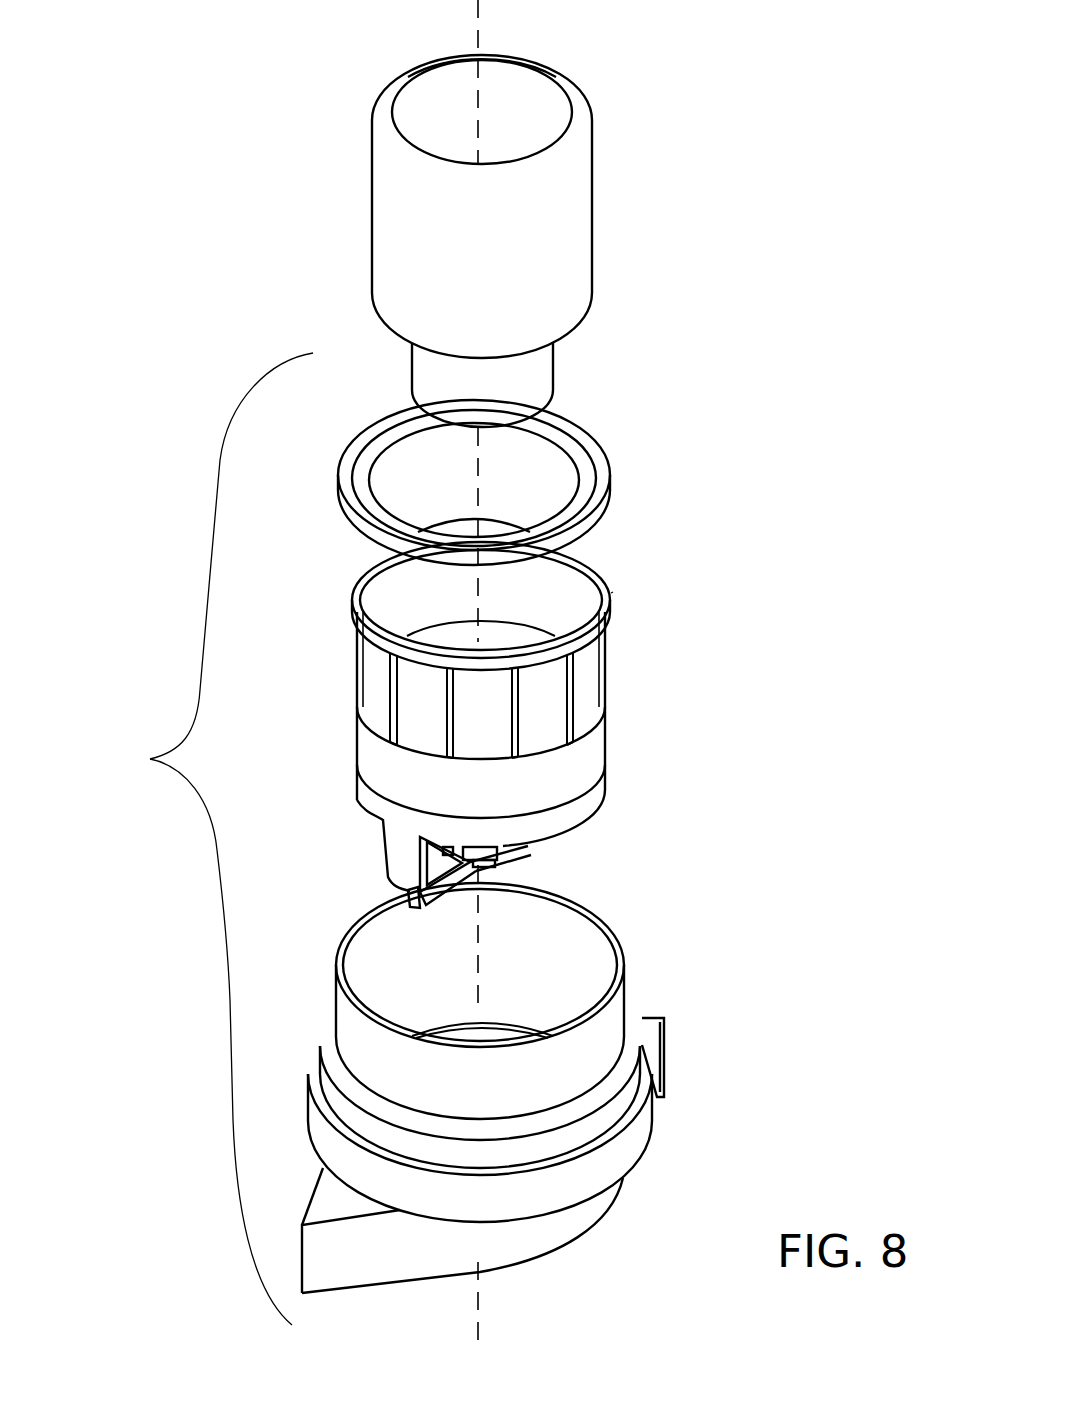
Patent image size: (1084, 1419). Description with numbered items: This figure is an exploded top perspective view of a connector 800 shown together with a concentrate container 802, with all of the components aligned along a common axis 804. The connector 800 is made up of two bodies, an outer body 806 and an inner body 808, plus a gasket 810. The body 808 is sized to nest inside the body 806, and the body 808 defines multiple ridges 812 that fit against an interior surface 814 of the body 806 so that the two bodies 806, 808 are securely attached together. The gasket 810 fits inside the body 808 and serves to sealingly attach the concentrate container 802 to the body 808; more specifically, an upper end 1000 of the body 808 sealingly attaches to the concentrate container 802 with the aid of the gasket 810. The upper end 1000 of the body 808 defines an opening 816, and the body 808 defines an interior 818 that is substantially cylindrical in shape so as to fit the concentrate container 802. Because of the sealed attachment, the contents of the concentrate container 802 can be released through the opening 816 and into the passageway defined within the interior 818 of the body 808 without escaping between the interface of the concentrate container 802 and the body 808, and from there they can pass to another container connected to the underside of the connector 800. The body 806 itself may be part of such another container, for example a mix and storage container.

The connector 800 is at (150, 759).
The concentrate container 802 is at (592, 226).
The axis 804 is at (480, 20).
The body 806 is at (637, 1013).
The body 808 is at (488, 725).
The gasket 810 is at (500, 482).
The ridges 812 is at (445, 708).
The interior surface 814 is at (593, 937).
The opening 816 is at (497, 430).
The interior 818 is at (392, 470).
The upper end 1000 is at (611, 593).